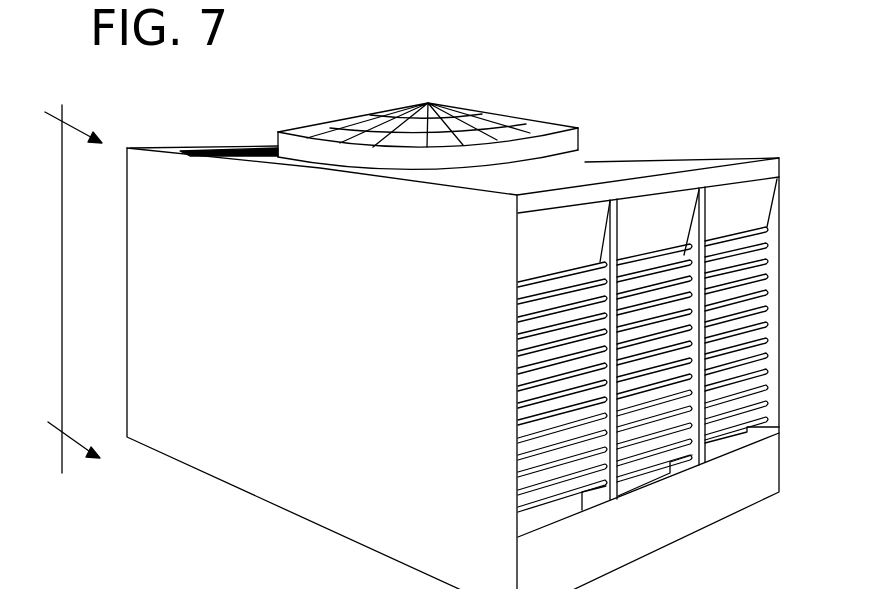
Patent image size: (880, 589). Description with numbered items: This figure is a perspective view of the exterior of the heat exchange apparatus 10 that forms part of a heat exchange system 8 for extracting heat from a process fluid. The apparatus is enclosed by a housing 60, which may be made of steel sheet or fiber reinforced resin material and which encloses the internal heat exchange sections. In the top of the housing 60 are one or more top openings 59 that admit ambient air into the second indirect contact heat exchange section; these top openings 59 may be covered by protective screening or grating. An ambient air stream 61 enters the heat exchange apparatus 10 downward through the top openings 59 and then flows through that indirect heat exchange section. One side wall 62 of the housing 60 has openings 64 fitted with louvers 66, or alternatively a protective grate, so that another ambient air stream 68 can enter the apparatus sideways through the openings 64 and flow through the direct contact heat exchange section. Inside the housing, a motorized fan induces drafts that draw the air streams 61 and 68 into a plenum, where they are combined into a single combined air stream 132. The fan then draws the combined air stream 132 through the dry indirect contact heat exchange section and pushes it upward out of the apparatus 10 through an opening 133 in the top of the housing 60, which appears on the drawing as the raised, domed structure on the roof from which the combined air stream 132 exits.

The heat exchange system 8 is at (69, 276).
The heat exchange apparatus 10 is at (132, 142).
The top openings 59 is at (250, 148).
The housing 60 is at (740, 152).
The ambient air stream 61 is at (276, 65).
The side wall 62 is at (754, 195).
The openings 64 is at (757, 267).
The louvers 66 is at (657, 257).
The ambient air stream 68 is at (828, 382).
The combined air stream 132 is at (437, 45).
The opening 133 is at (513, 128).